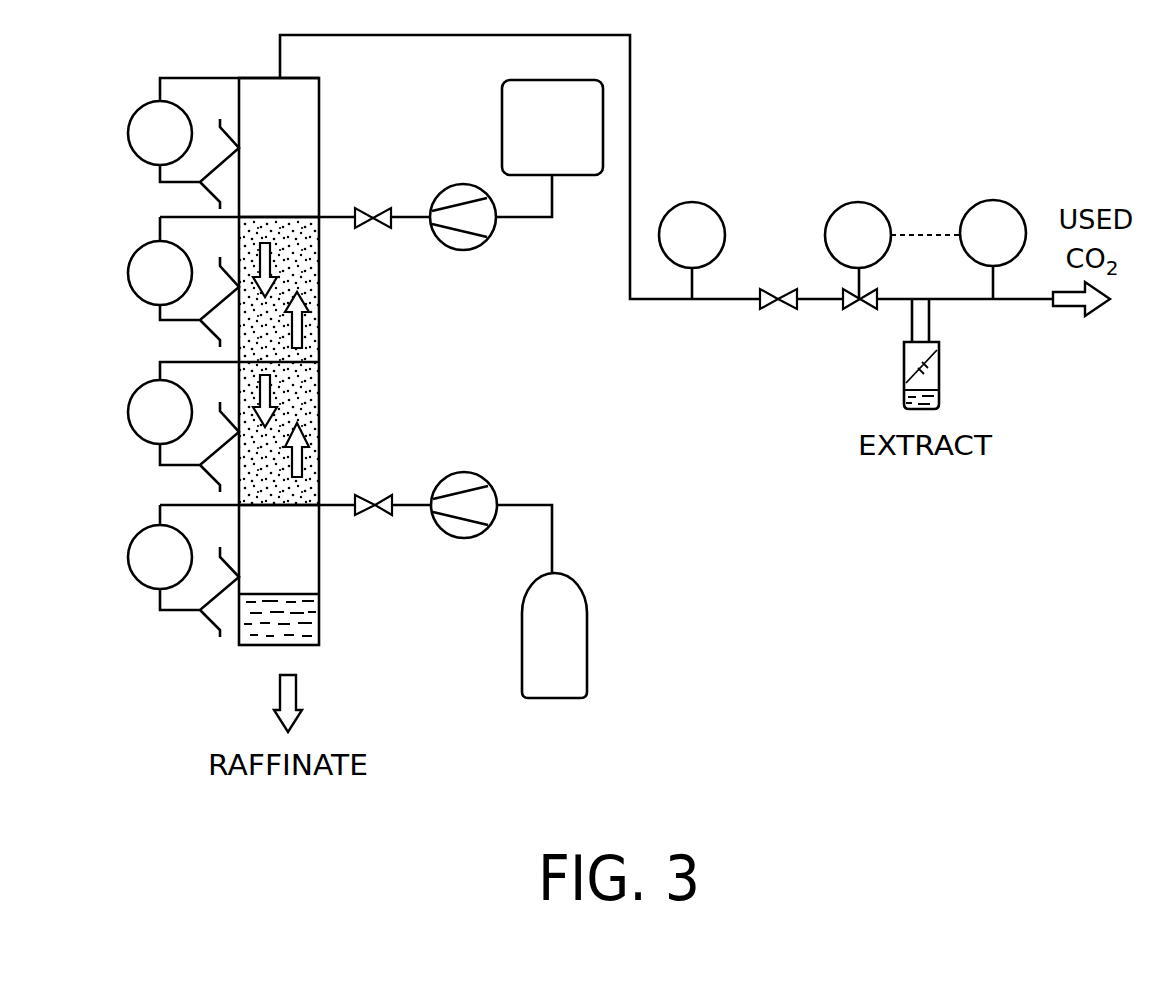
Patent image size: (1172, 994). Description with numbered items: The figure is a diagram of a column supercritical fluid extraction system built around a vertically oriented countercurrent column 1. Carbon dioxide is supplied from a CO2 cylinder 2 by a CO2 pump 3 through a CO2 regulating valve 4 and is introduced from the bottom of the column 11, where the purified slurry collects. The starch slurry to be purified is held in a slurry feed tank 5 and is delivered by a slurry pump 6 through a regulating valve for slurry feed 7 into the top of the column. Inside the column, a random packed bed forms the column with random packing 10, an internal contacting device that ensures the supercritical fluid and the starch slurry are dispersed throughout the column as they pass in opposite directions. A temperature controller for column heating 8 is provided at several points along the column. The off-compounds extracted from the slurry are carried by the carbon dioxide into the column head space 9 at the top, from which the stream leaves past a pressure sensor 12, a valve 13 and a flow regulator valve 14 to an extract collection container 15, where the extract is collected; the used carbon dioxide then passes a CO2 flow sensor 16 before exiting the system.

The countercurrent column 1 is at (300, 350).
The CO2 cylinder 2 is at (561, 632).
The CO2 pump 3 is at (472, 498).
The CO2 regulating valve 4 is at (381, 488).
The slurry feed tank 5 is at (541, 114).
The slurry pump 6 is at (463, 201).
The regulating valve for slurry feed 7 is at (381, 199).
The temperature controller for column heating 8 is at (172, 357).
The column head space 9 is at (292, 147).
The column with random packing 10 is at (300, 361).
The bottom of column 11 is at (300, 598).
The pressure sensor 12 is at (706, 240).
The valve 13 is at (765, 320).
The flow regulator valve 14 is at (857, 276).
The extract collection container 15 is at (941, 364).
The CO2 flow sensor 16 is at (977, 238).